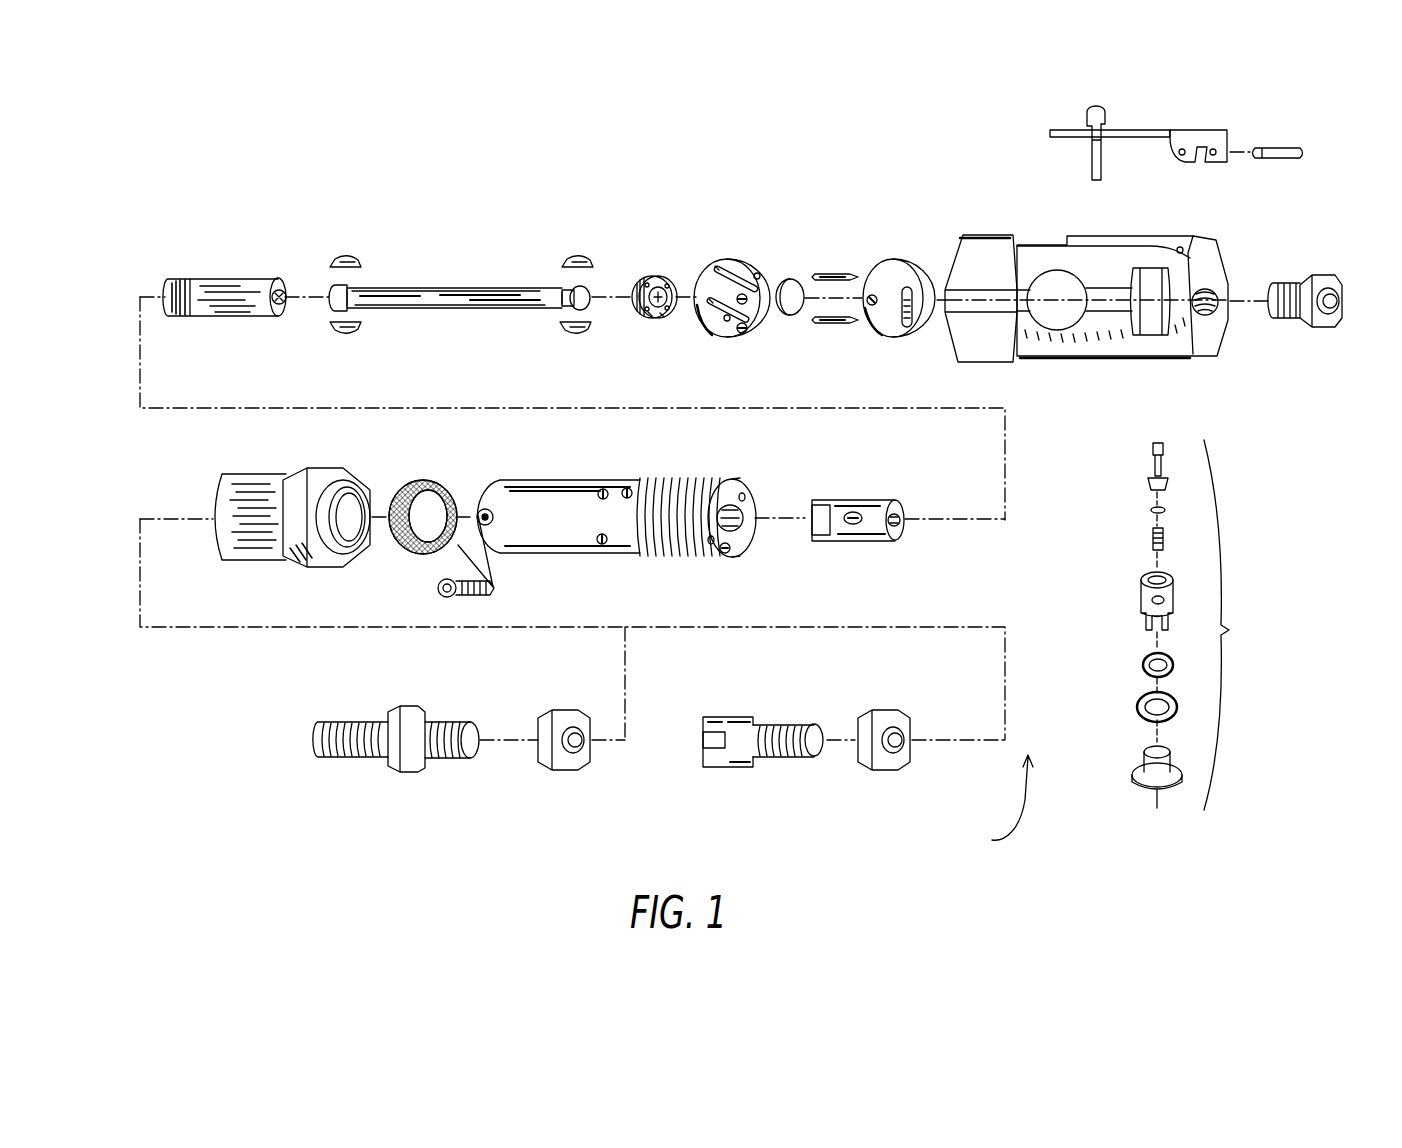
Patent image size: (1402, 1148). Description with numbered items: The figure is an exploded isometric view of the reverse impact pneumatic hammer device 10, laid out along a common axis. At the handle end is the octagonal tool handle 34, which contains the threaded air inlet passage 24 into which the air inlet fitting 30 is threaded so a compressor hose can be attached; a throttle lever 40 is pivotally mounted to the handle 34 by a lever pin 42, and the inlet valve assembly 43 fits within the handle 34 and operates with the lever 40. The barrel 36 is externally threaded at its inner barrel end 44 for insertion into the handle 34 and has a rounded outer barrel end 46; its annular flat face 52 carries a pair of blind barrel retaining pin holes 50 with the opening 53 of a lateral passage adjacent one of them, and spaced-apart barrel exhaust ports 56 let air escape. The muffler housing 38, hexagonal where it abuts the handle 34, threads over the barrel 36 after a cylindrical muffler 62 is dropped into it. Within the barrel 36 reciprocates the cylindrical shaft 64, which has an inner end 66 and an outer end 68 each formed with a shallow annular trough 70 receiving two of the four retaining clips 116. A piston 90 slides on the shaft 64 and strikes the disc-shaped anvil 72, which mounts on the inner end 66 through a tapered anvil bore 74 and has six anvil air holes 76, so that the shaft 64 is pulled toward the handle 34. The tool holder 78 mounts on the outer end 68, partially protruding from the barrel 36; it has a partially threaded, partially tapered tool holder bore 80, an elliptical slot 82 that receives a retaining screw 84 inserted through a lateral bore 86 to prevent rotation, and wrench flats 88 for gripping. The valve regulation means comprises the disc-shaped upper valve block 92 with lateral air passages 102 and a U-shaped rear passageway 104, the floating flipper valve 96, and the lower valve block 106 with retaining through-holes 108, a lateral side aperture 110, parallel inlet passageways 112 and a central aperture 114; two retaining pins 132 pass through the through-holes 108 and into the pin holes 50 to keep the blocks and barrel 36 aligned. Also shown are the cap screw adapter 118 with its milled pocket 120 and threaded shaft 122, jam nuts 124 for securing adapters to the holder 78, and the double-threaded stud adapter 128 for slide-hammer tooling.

The pneumatic device 10 is at (1000, 802).
The air inlet passage 24 is at (1215, 320).
The air inlet fitting 30 is at (1327, 320).
The tool handle 34 is at (1050, 243).
The barrel 36 is at (553, 553).
The muffler housing 38 is at (253, 557).
The throttle lever 40 is at (1163, 130).
The lever pin 42 is at (1298, 147).
The inlet valve assembly 43 is at (1195, 625).
The inner barrel end 44 is at (718, 477).
The outer barrel end 46 is at (478, 487).
The barrel retaining pin holes 50 is at (743, 494).
The annular flat face 52 is at (745, 535).
The opening 53 is at (726, 553).
The barrel exhaust ports 56 is at (602, 533).
The muffler 62 is at (410, 553).
The shaft 64 is at (458, 309).
The inner end 66 is at (563, 308).
The outer end 68 is at (351, 308).
The trough 70 is at (345, 289).
The anvil 72 is at (663, 322).
The anvil bore 74 is at (658, 318).
The anvil air holes 76 is at (665, 287).
The tool holder 78 is at (835, 540).
The tool holder bore 80 is at (895, 530).
The elliptical slot 82 is at (853, 516).
The retaining screw 84 is at (448, 595).
The lateral bore 86 is at (484, 512).
The wrench flats 88 is at (810, 519).
The piston 90 is at (211, 278).
The upper valve block 92 is at (927, 338).
The flipper valve 96 is at (778, 280).
The lateral air passages 102 is at (870, 306).
The rear passageway 104 is at (913, 318).
The lower valve block 106 is at (752, 340).
The lower valve retaining through-holes 108 is at (763, 270).
The lateral side aperture 110 is at (743, 333).
The inlet passageways 112 is at (712, 300).
The central lower valve block aperture 114 is at (745, 304).
The retaining clips 116 is at (352, 258).
The cap screw adapter 118 is at (733, 762).
The milled pocket 120 is at (707, 720).
The threaded shaft 122 is at (807, 727).
The jam nuts 124 is at (547, 767).
The stud adapter 128 is at (347, 758).
The retaining pins 132 is at (822, 272).